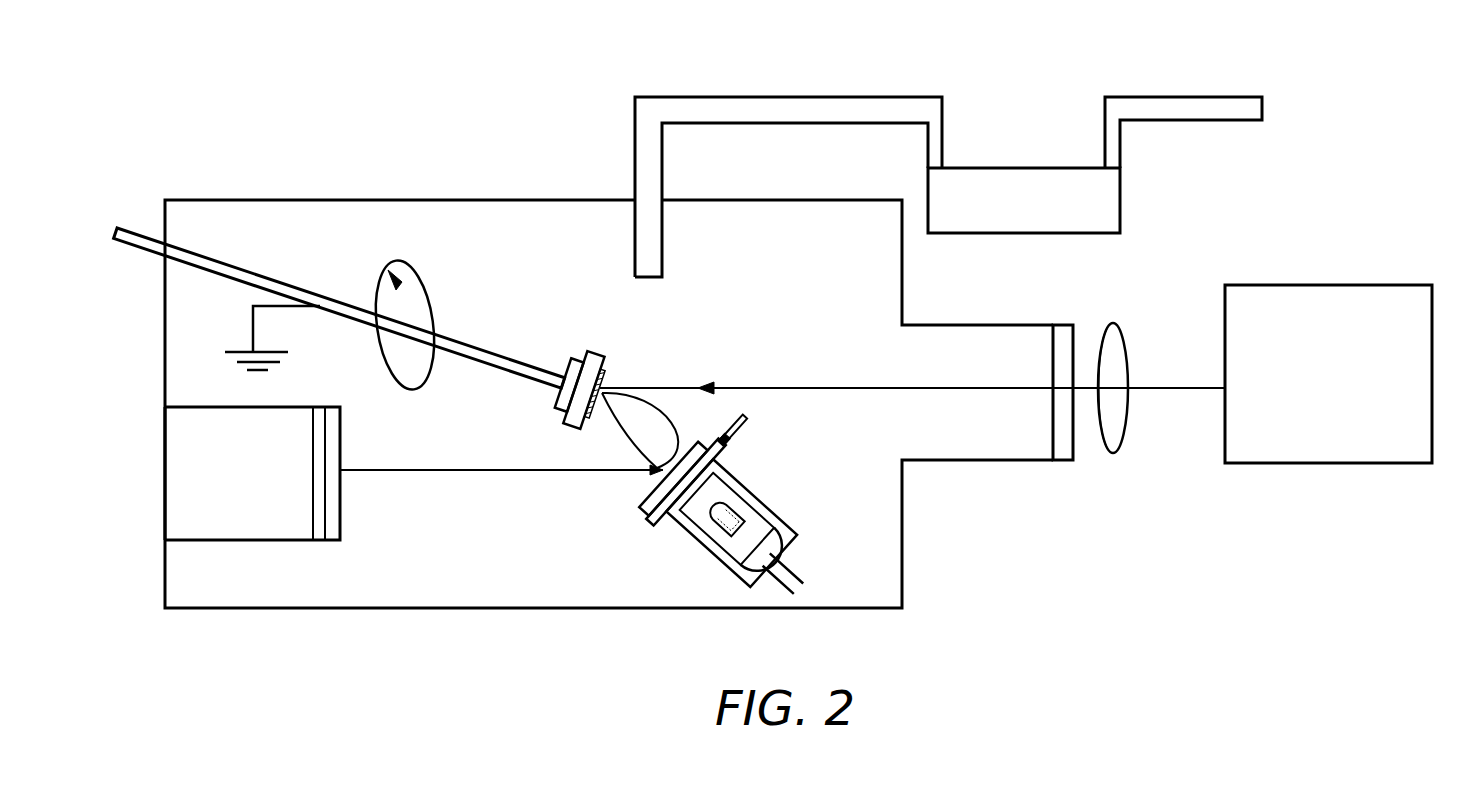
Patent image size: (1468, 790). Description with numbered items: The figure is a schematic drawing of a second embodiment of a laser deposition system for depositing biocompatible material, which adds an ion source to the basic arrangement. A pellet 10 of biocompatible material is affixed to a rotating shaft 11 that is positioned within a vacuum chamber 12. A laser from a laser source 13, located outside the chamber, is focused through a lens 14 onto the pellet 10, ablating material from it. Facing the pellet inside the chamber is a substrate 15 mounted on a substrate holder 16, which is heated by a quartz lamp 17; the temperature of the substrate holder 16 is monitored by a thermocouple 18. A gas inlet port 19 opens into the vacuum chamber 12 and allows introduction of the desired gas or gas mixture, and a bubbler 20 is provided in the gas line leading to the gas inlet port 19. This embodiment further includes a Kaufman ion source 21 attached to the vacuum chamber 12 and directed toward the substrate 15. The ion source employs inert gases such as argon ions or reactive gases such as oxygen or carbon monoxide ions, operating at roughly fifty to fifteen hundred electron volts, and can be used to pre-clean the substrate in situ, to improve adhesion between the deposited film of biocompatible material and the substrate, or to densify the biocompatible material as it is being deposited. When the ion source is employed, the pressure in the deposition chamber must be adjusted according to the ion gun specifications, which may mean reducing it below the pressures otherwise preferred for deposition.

The pellet 10 is at (603, 384).
The rotating shaft 11 is at (282, 275).
The vacuum chamber 12 is at (552, 242).
The laser source 13 is at (1340, 398).
The lens 14 is at (1122, 336).
The substrate 15 is at (658, 482).
The substrate holder 16 is at (652, 520).
The quartz lamp 17 is at (755, 516).
The thermocouple 18 is at (746, 432).
The gas inlet port 19 is at (712, 97).
The bubbler 20 is at (1040, 214).
The Kaufman ion source 21 is at (250, 483).